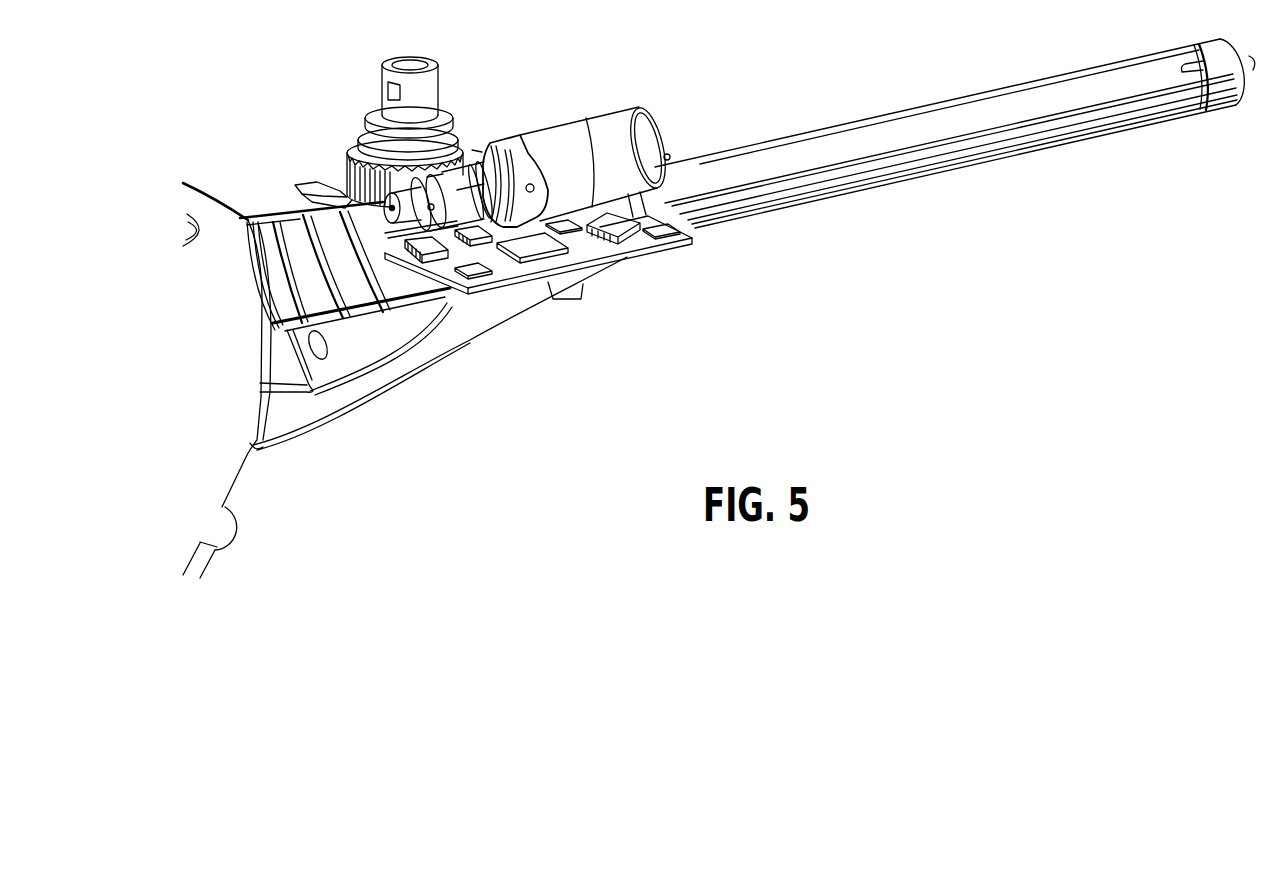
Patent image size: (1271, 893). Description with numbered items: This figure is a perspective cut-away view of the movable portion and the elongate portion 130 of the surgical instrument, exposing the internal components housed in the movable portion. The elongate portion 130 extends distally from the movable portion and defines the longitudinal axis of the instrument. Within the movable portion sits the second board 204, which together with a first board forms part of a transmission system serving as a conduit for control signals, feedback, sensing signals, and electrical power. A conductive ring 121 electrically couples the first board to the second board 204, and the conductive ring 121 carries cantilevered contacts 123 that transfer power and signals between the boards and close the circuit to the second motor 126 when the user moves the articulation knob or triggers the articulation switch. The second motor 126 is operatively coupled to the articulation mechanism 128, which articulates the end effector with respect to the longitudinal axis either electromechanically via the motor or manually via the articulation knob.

The conductive ring 121 is at (337, 292).
The cantilevered contacts 123 is at (344, 186).
The second motor 126 is at (597, 113).
The articulation mechanism 128 is at (478, 101).
The elongate portion 130 is at (849, 104).
The second board 204 is at (658, 250).